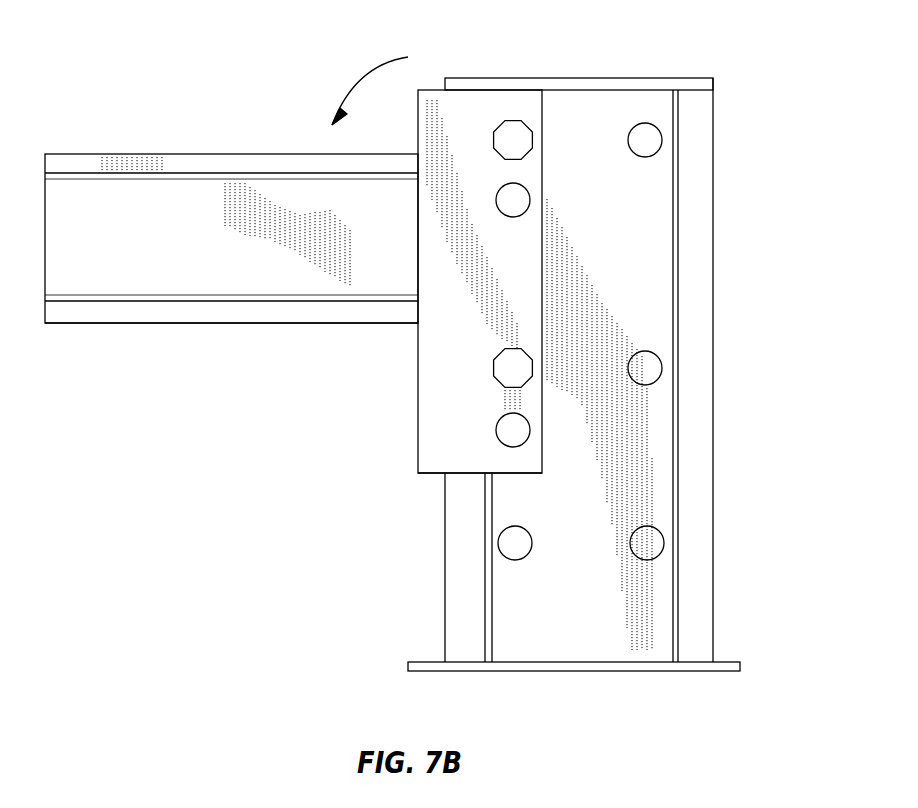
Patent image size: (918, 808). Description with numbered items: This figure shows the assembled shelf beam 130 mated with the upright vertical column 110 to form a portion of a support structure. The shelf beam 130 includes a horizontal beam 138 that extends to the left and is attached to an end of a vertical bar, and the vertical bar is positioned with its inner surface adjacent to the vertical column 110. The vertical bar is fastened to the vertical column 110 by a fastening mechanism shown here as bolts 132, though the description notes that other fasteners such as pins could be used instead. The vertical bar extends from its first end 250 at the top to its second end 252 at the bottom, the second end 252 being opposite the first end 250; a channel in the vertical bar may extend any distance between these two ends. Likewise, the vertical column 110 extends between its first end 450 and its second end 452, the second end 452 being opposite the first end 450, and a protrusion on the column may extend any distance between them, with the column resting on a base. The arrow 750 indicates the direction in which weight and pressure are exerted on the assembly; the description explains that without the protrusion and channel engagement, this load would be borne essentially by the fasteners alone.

The vertical column 110 is at (713, 275).
The shelf beam 130 is at (218, 323).
The horizontal beam 138 is at (157, 323).
The bolts 132 is at (515, 368).
The first end of vertical bar 250 is at (472, 88).
The second end of vertical bar 252 is at (470, 473).
The first end of vertical column 450 is at (570, 662).
The second end of vertical column 452 is at (582, 78).
The arrow 750 is at (360, 78).